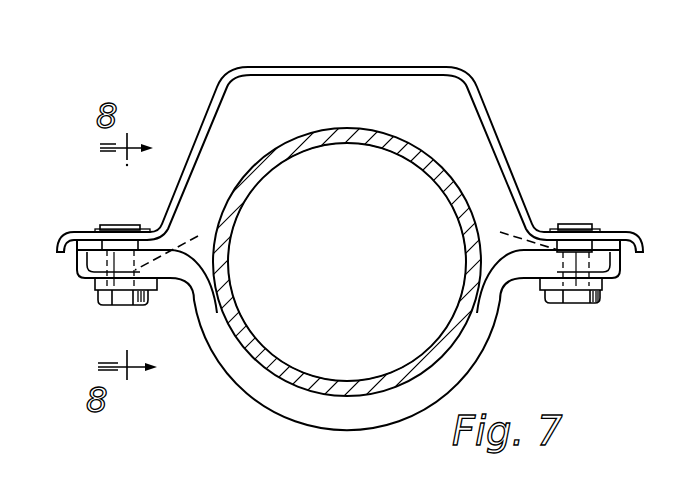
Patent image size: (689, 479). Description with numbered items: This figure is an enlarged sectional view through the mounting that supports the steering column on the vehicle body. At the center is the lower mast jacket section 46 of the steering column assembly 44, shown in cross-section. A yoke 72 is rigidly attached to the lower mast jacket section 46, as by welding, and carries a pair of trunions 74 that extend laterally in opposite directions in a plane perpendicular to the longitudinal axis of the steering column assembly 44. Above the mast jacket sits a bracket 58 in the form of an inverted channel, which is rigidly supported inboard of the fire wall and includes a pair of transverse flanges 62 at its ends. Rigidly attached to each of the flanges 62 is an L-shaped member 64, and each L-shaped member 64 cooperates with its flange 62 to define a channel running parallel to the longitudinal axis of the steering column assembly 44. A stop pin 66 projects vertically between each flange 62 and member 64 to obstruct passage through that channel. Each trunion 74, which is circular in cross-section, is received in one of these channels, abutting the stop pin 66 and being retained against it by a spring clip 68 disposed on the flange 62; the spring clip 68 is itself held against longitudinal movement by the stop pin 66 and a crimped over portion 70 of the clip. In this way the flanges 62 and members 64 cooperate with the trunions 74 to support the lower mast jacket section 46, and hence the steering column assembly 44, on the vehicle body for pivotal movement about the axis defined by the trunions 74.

The steering column assembly 44 is at (464, 173).
The lower mast jacket section 46 is at (430, 153).
The bracket 58 is at (376, 61).
The transverse flanges 62 is at (72, 233).
The L-shaped member 64 is at (96, 292).
The stop pins 66 is at (346, 240).
The spring clip 68 is at (114, 252).
The crimped over portion 70 is at (118, 228).
The yoke 72 is at (306, 430).
The trunions 74 is at (105, 258).